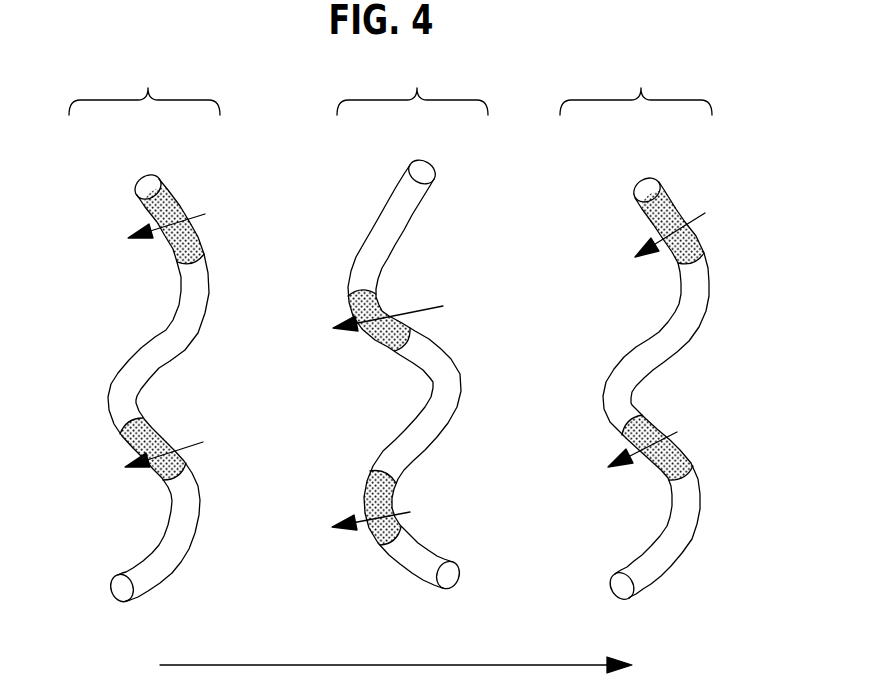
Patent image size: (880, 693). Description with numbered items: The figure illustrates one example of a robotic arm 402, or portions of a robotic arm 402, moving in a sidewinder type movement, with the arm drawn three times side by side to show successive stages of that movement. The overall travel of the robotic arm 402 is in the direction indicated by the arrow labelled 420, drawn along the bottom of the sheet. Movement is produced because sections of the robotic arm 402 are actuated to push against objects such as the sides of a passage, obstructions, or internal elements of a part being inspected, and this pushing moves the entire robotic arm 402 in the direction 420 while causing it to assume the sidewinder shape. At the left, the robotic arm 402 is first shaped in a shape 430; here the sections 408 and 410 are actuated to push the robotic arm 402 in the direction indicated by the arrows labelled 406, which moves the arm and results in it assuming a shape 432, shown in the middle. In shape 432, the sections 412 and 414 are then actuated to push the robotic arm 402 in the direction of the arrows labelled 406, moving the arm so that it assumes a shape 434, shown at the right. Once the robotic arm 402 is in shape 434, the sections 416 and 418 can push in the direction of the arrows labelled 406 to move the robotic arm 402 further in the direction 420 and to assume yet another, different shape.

The robotic arm 402 is at (113, 371).
The arrows indicating push direction 406 is at (200, 216).
The section 408 is at (192, 245).
The section 410 is at (192, 477).
The section 412 is at (413, 338).
The section 414 is at (385, 538).
The section 416 is at (687, 247).
The section 418 is at (677, 453).
The arrow indicating direction of movement 420 is at (558, 665).
The shape 430 is at (144, 88).
The shape 432 is at (412, 88).
The shape 434 is at (636, 88).